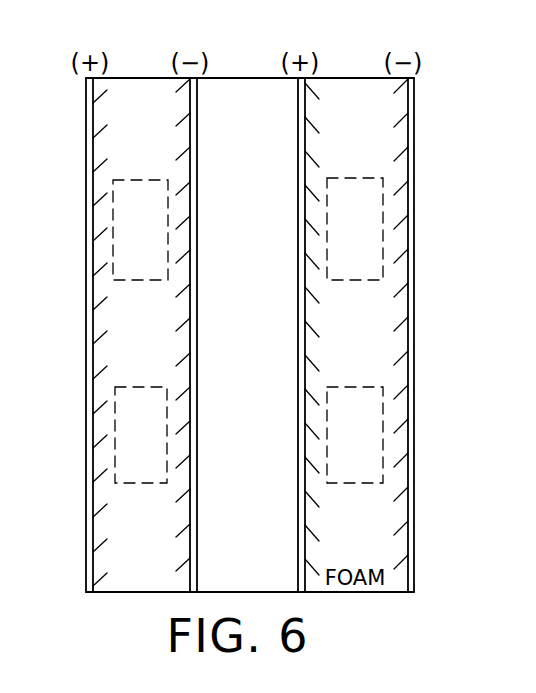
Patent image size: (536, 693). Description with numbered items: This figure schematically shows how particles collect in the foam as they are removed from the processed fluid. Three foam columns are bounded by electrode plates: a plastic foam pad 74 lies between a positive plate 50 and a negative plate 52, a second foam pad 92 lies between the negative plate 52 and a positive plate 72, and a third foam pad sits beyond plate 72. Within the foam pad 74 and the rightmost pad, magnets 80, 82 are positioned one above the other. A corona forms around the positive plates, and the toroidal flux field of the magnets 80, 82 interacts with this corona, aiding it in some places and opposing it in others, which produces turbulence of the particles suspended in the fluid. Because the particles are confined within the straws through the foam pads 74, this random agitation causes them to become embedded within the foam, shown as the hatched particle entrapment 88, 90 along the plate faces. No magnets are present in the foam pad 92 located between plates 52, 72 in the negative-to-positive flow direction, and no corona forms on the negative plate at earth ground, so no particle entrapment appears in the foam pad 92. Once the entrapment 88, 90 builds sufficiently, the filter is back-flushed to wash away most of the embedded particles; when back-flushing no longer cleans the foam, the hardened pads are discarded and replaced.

The positive plate 50 is at (85, 253).
The negative plate 52 is at (198, 242).
The positive plate 72 is at (297, 158).
The plastic foam pad 74 is at (116, 530).
The magnet 80 is at (122, 239).
The magnet 82 is at (122, 446).
The particle entrapment 88 is at (102, 350).
The particle entrapment 90 is at (414, 273).
The foam pad 92 is at (260, 536).